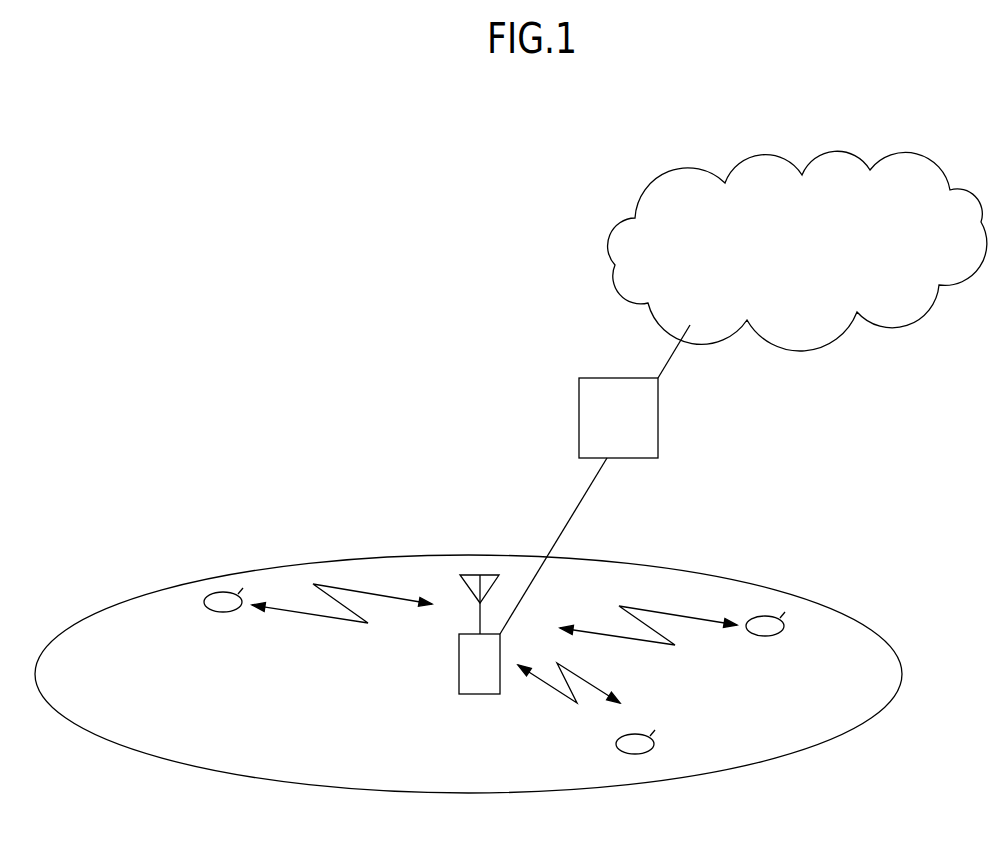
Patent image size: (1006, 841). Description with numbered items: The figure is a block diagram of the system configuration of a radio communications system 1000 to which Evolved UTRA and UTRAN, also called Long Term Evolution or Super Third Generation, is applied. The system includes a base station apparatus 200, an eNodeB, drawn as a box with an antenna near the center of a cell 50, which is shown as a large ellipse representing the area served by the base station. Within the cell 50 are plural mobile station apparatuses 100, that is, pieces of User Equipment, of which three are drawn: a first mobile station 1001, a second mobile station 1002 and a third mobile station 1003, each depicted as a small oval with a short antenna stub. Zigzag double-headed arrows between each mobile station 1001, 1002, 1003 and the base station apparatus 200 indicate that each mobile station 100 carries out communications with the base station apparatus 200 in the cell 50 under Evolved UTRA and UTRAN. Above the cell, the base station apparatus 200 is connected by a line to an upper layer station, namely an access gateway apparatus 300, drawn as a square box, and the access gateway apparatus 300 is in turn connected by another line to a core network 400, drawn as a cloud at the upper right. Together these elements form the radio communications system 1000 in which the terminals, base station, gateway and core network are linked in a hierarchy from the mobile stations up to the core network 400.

The radio communications system 1000 is at (226, 201).
The core network 400 is at (842, 162).
The access gateway apparatus 300 is at (658, 415).
The base station apparatus 200 is at (459, 670).
The mobile station apparatus 100 is at (528, 674).
The mobile station apparatus 1001 is at (222, 612).
The mobile station apparatus 1002 is at (615, 744).
The mobile station apparatus 1003 is at (768, 636).
The cell 50 is at (743, 767).